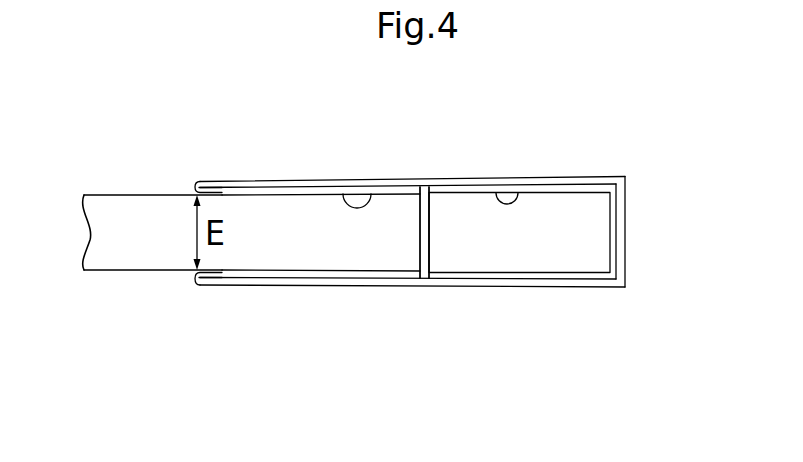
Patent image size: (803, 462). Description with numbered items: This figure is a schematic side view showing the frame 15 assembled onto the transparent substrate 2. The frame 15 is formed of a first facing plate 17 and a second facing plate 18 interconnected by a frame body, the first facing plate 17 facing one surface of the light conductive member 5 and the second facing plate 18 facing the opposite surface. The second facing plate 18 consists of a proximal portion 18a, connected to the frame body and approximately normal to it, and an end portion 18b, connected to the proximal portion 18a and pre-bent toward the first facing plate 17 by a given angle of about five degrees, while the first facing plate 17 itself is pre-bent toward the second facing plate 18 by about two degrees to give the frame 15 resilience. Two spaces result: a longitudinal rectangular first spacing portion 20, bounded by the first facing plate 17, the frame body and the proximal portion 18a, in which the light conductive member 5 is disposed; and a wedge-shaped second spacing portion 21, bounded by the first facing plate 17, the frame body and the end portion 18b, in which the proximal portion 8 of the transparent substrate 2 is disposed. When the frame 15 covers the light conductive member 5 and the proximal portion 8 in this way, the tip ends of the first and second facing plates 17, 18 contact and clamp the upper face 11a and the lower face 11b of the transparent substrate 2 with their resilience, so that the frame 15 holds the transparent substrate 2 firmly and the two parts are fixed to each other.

The transparent substrate 2 is at (153, 275).
The light conductive member 5 is at (539, 252).
The proximal portion of the transparent substrate 8 is at (310, 240).
The upper face of the transparent substrate 11a is at (223, 194).
The lower face of the transparent substrate 11b is at (250, 282).
The frame 15 is at (450, 252).
The first facing plate 17 is at (302, 185).
The second facing plate 18 is at (430, 299).
The proximal portion of the second facing plate 18a is at (487, 282).
The end portion of the second facing plate 18b is at (358, 280).
The first spacing portion 20 is at (520, 192).
The second spacing portion 21 is at (380, 193).